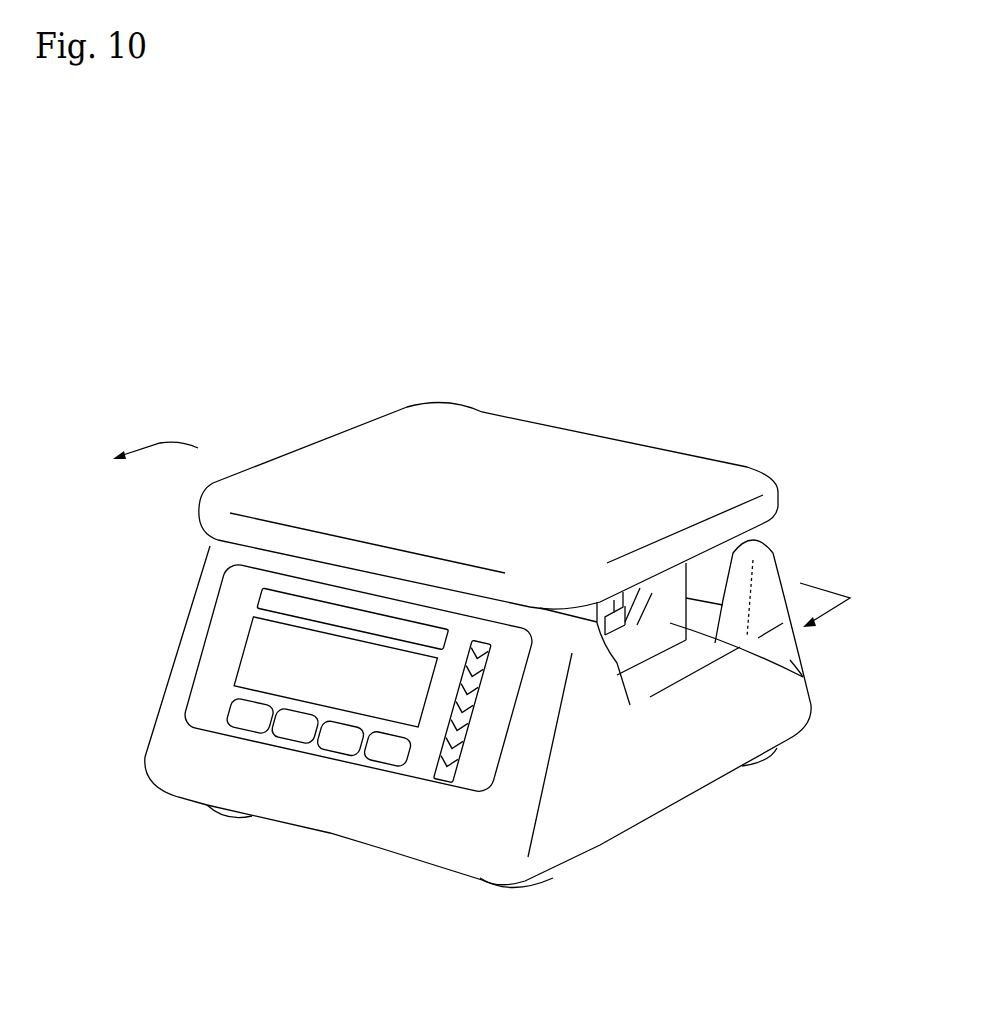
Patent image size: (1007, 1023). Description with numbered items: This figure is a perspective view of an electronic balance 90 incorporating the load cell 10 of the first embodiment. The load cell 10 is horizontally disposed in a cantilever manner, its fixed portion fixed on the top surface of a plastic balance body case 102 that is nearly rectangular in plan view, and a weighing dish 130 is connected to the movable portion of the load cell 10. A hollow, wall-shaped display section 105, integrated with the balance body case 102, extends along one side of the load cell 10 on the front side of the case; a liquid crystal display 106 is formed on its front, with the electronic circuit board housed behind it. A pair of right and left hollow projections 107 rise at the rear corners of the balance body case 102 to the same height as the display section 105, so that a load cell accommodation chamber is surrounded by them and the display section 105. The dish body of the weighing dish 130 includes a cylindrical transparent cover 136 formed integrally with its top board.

The electronic balance 90 is at (288, 374).
The weighing dish 130 is at (407, 437).
The balance body case 102 is at (652, 783).
The hollow projection 107 is at (768, 573).
The cylindrical transparent cover 136 is at (803, 676).
The load cell 10 is at (634, 646).
The display section 105 is at (406, 704).
The liquid crystal display 106 is at (258, 652).